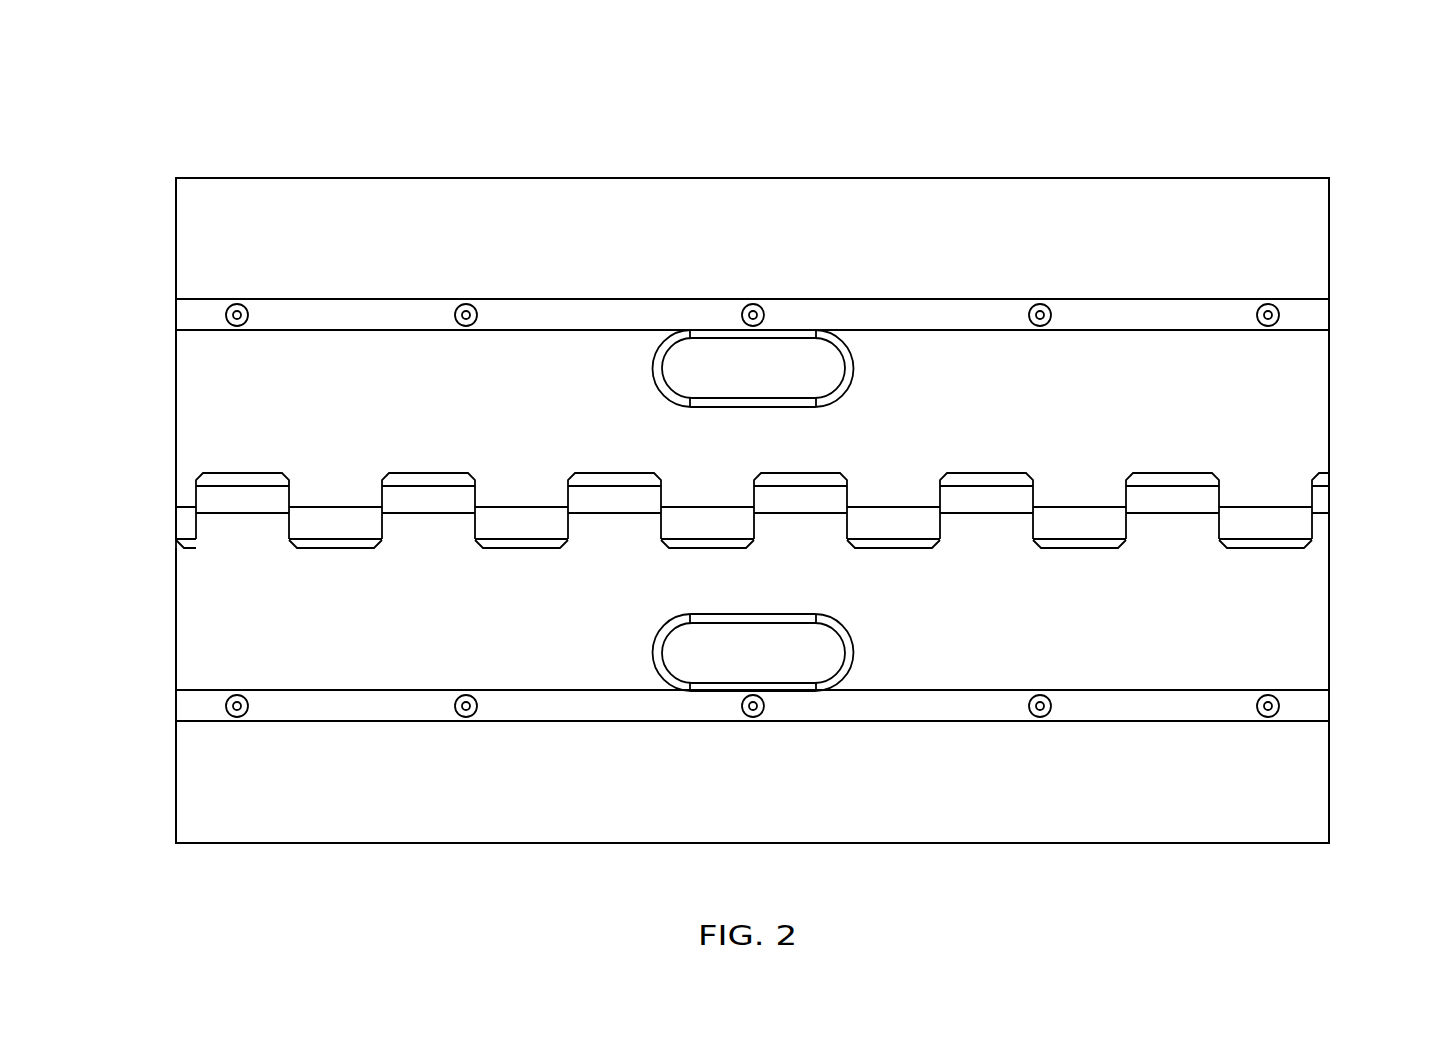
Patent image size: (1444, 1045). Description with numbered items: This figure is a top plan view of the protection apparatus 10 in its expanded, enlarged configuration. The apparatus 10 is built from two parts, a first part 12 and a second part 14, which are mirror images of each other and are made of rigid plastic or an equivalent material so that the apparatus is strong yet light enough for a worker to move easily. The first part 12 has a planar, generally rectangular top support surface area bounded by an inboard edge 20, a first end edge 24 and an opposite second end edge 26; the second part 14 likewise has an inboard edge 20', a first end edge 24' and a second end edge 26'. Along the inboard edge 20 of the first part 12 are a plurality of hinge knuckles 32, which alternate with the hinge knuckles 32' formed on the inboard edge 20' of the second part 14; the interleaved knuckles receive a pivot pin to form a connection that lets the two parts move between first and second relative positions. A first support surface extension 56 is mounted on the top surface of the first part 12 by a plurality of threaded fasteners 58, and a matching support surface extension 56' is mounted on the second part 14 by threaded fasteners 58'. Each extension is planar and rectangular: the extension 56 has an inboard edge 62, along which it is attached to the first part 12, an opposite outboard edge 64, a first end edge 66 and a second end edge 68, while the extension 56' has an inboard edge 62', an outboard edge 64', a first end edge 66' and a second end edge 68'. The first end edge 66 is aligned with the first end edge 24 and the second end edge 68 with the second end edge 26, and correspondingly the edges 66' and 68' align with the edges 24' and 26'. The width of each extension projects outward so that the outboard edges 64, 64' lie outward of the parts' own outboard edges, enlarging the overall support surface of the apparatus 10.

The protection apparatus 10 is at (866, 118).
The first part 12 is at (152, 640).
The second part 14 is at (153, 175).
The inboard edge 20 is at (788, 516).
The inboard edge 20' is at (792, 565).
The first end edge 24 is at (1366, 581).
The first end edge 24' is at (1371, 386).
The second end edge 26 is at (138, 631).
The second end edge 26' is at (140, 419).
The hinge knuckles 32 is at (757, 459).
The hinge knuckles 32' is at (760, 471).
The first support surface extension 56 is at (752, 807).
The support surface extension 56' is at (752, 210).
The threaded fasteners 58 is at (752, 794).
The threaded fasteners 58' is at (752, 223).
The inboard edge 62 is at (752, 780).
The inboard edge 62' is at (752, 235).
The outboard edge 64 is at (752, 873).
The outboard edge 64' is at (752, 141).
The first end edge 66 is at (1369, 782).
The first end edge 66' is at (1369, 238).
The second end edge 68 is at (133, 782).
The second end edge 68' is at (140, 238).